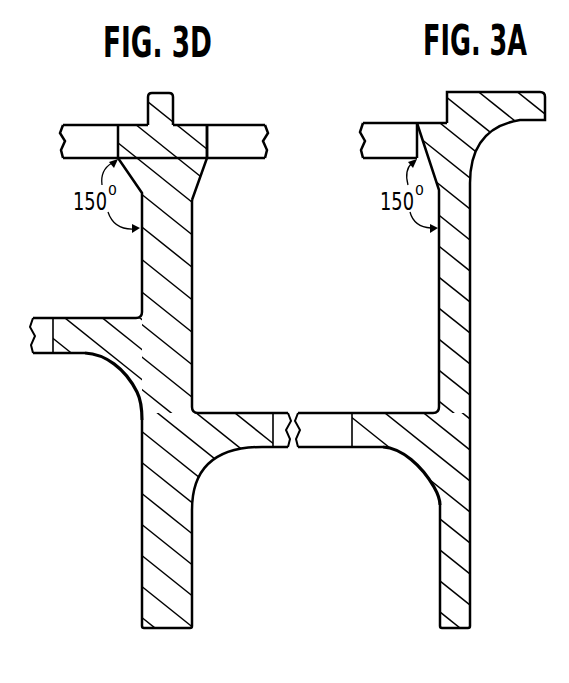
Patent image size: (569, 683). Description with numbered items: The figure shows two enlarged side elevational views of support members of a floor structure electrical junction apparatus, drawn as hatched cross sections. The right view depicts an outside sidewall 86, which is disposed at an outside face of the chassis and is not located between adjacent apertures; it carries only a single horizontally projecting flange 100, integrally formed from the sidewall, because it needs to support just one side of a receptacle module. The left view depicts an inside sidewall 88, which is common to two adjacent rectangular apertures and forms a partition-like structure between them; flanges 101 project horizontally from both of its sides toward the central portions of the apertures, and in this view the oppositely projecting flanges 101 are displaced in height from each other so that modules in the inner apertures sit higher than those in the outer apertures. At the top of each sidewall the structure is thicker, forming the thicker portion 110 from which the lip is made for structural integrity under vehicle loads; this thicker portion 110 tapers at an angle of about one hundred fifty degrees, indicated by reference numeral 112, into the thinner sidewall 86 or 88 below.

In FIG. 3A, the outside sidewall 86 is at (463, 290).
In FIG. 3D, the inside sidewall 88 is at (167, 163).
In FIG. 3A, the flange 100 is at (383, 417).
In FIG. 3D, the flange 101 is at (85, 328).
In FIG. 3D, the thicker portion 110 is at (121, 114).
In FIG. 3A, the thicker portion 110 is at (489, 163).
In FIG. 3D, the taper angle 112 is at (108, 222).
In FIG. 3A, the taper angle 112 is at (416, 223).